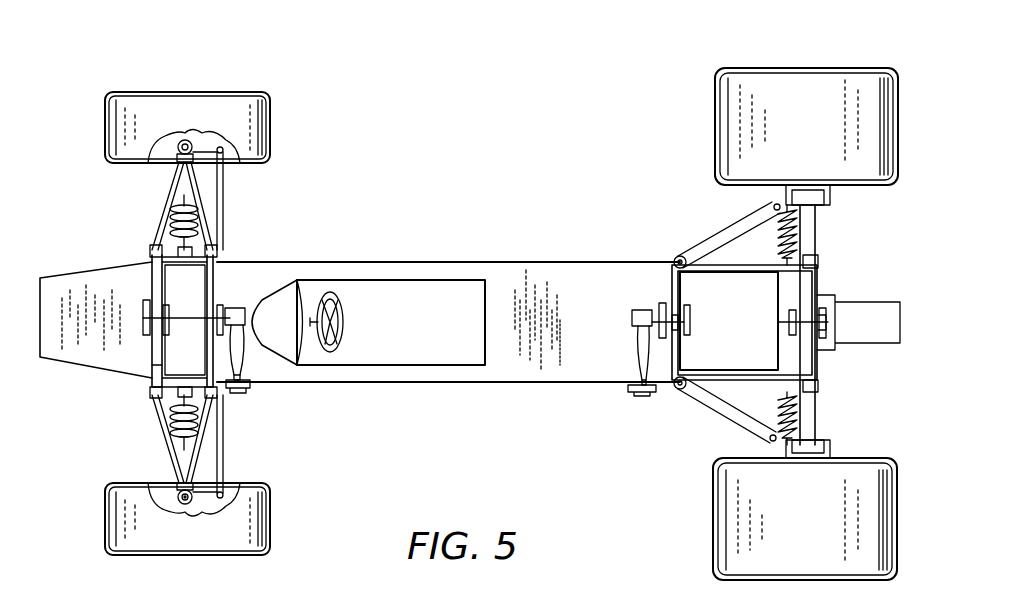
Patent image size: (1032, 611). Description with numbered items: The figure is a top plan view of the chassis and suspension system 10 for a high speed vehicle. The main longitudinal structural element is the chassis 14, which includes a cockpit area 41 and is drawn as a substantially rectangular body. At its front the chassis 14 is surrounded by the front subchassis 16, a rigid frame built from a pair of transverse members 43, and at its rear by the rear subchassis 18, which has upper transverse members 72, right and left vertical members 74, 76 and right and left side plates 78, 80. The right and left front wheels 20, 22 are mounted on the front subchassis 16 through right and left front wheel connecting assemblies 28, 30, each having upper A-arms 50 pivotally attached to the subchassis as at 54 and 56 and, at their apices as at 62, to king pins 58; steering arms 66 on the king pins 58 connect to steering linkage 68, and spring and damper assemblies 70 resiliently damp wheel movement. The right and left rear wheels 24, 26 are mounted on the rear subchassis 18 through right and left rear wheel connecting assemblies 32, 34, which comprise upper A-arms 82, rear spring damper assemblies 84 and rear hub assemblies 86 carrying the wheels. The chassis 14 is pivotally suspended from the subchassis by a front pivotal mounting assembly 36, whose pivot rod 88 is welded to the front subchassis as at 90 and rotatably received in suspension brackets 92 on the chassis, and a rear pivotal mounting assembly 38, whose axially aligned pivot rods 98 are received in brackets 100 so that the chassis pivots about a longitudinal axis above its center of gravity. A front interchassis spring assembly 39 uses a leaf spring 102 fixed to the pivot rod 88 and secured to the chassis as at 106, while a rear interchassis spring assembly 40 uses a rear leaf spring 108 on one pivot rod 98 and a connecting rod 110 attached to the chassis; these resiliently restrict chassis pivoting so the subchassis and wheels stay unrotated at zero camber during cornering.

The chassis and suspension system 10 is at (447, 208).
The chassis 14 is at (525, 285).
The front subchassis 16 is at (145, 350).
The rear subchassis 18 is at (736, 388).
The right front wheel 20 is at (220, 105).
The left front wheel 22 is at (248, 522).
The right rear wheel 24 is at (780, 92).
The left rear wheel 26 is at (735, 505).
The right front wheel connecting assembly 28 is at (165, 200).
The left front wheel connecting assembly 30 is at (165, 445).
The right rear wheel connecting assembly 32 is at (745, 210).
The left rear wheel connecting assembly 34 is at (822, 410).
The front pivotal mounting assembly 36 is at (186, 302).
The rear pivotal mounting assembly 38 is at (692, 296).
The front interchassis spring assembly 39 is at (248, 362).
The rear interchassis spring assembly 40 is at (632, 358).
The cockpit area 41 is at (403, 312).
The transverse members 43 is at (157, 370).
The upper A-arms 50 is at (162, 226).
The pivotal attachment of upper A-arms to subchassis 54 is at (212, 255).
The pivotal attachment of lower A-arms to subchassis 56 is at (228, 388).
The king pins 58 is at (185, 140).
The pivotal attachment of upper A-arms to king pins 62 is at (225, 150).
The steering arms 66 is at (222, 485).
The steering linkage 68 is at (222, 435).
The spring and damper assemblies 70 is at (196, 220).
The upper transverse members 72 is at (806, 292).
The right vertical members 74 is at (815, 262).
The left vertical members 76 is at (815, 386).
The right side plate 78 is at (720, 262).
The left side plate 80 is at (760, 378).
The upper A-arms 82 is at (808, 240).
The rear spring damper assemblies 84 is at (778, 233).
The rear hub assemblies 86 is at (832, 195).
The pivot rod 88 is at (190, 318).
The welded interconnection 90 is at (205, 322).
The suspension brackets 92 is at (148, 308).
The rear pivot rods 98 is at (826, 325).
The brackets 100 is at (822, 345).
The leaf spring 102 is at (240, 338).
The attachment of connecting rod to chassis 106 is at (690, 318).
The rear leaf spring 108 is at (642, 335).
The connecting rod 110 is at (638, 394).